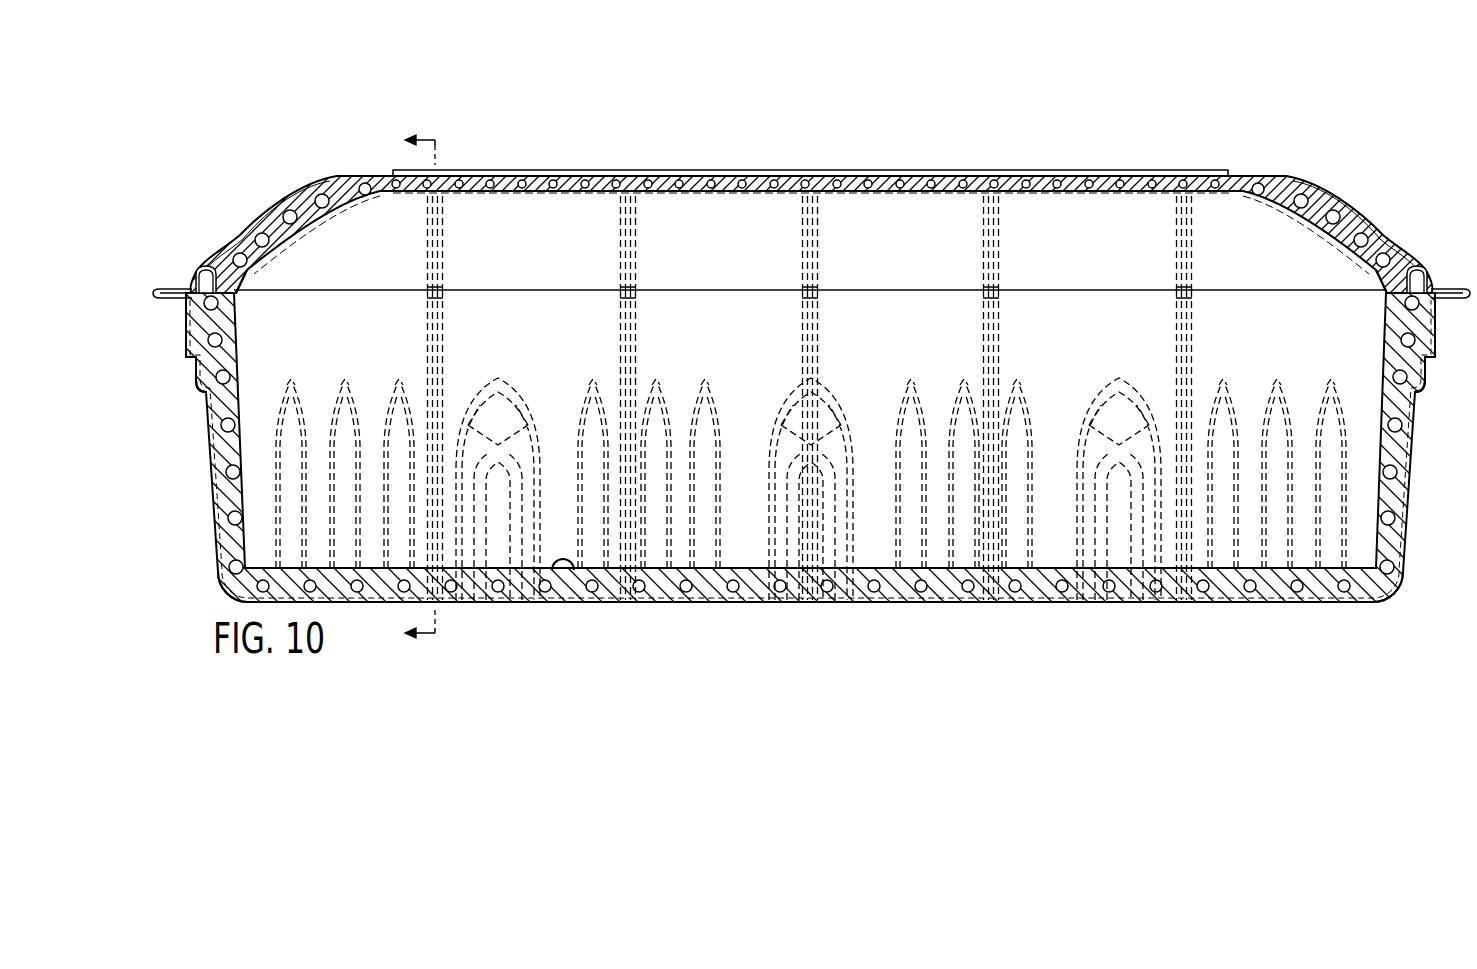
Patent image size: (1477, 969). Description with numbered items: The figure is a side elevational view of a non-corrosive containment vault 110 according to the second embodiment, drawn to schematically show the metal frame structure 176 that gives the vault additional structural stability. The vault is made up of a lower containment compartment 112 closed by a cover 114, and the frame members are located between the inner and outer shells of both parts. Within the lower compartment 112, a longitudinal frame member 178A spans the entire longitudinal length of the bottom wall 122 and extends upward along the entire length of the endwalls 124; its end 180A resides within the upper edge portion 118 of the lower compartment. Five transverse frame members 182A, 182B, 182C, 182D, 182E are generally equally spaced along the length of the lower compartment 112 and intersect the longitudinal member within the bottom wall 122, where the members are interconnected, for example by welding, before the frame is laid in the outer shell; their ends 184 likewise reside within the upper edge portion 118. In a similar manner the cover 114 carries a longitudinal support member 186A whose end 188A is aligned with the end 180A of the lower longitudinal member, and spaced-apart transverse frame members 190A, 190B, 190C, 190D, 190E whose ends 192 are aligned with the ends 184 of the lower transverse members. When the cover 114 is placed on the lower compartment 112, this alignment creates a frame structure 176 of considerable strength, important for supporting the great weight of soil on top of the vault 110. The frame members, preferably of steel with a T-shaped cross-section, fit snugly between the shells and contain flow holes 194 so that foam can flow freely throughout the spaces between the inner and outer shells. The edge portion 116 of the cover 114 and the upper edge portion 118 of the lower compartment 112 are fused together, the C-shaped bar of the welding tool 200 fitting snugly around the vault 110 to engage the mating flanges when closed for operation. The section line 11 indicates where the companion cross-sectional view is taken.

The containment vault 110 is at (1162, 115).
The section line 11 is at (419, 389).
The lower containment compartment 112 is at (1393, 497).
The cover 114 is at (1292, 184).
The edge portion of the cover 116 is at (207, 264).
The upper edge portion of the lower compartment 118 is at (178, 300).
The bottom wall 122 is at (566, 592).
The endwall 124 is at (205, 400).
The frame structure 176 is at (497, 188).
The longitudinal frame member 178A is at (1043, 592).
The end of longitudinal frame member 180A is at (240, 293).
The transverse frame member 182A is at (445, 337).
The transverse frame member 182B is at (638, 337).
The transverse frame member 182C is at (820, 337).
The transverse frame member 182D is at (1001, 337).
The transverse frame member 182E is at (1194, 337).
The ends of transverse frame members 184 is at (443, 300).
The longitudinal support member 186A is at (880, 184).
The end of longitudinal support member 188A is at (246, 272).
The transverse frame member of the cover 190A is at (443, 231).
The transverse frame member of the cover 190B is at (636, 231).
The transverse frame member of the cover 190C is at (818, 231).
The transverse frame member of the cover 190D is at (999, 231).
The transverse frame member of the cover 190E is at (1192, 231).
The ends of cover transverse frame members 192 is at (440, 288).
The flow holes 194 is at (365, 185).
The welding tool 200 is at (157, 289).